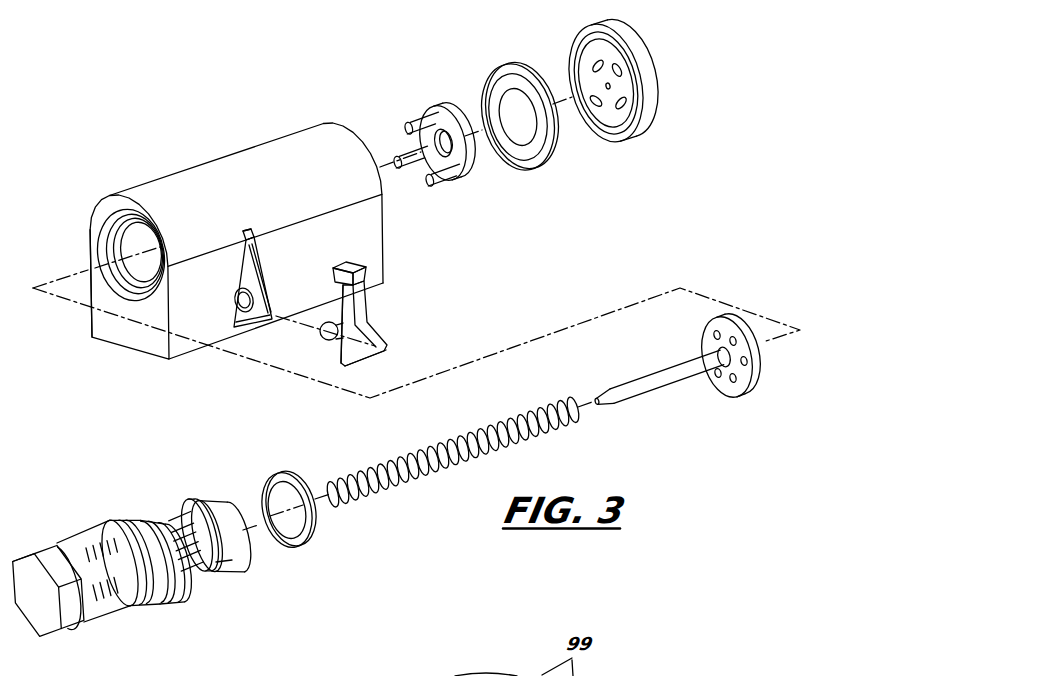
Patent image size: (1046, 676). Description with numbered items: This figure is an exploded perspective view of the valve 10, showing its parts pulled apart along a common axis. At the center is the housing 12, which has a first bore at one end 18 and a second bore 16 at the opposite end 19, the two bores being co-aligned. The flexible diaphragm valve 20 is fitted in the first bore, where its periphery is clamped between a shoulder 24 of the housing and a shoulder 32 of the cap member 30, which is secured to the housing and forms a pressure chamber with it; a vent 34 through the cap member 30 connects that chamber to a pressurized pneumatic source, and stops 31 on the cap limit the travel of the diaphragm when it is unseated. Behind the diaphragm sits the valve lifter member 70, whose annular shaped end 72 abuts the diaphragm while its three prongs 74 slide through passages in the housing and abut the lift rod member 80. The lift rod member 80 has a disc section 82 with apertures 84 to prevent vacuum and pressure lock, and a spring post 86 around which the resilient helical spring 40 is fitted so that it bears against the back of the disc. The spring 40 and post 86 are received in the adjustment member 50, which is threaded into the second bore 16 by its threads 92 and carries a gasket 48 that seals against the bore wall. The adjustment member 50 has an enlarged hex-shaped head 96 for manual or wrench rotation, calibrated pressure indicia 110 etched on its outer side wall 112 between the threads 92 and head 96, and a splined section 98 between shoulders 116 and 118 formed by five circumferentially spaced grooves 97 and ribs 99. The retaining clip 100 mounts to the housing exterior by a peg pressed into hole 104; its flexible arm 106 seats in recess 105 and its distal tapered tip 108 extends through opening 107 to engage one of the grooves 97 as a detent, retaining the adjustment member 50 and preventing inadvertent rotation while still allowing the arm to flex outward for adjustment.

The valve 10 is at (338, 85).
The housing 12 is at (261, 144).
The second bore 16 is at (130, 238).
The end of housing 18 is at (356, 142).
The end of housing 19 is at (90, 227).
The flexible diaphragm valve 20 is at (558, 140).
The shoulder of housing 24 is at (518, 67).
The cap member 30 is at (656, 127).
The stops 31 is at (618, 70).
The shoulder of cap member 32 is at (602, 37).
The vent 34 is at (604, 85).
The resilient helical spring 40 is at (412, 487).
The gasket 48 is at (293, 543).
The adjustment member 50 is at (105, 622).
The valve lifter member 70 is at (442, 100).
The annular shaped end 72 is at (453, 103).
The prongs 74 is at (410, 117).
The lift rod member 80 is at (627, 370).
The disc section 82 is at (753, 350).
The apertures 84 is at (735, 379).
The spring post 86 is at (642, 385).
The threads 92 is at (124, 521).
The enlarged head 96 is at (45, 558).
The grooves 97 is at (224, 564).
The splined section 98 is at (190, 573).
The ribs 99 is at (173, 550).
The retaining clip 100 is at (378, 344).
The hole 104 is at (248, 307).
The recess 105 is at (257, 282).
The flexible arm 106 is at (366, 305).
The opening 107 is at (249, 232).
The distal tapered tip 108 is at (337, 267).
The calibrated pressure indicia 110 is at (122, 587).
The outer side wall 112 is at (80, 558).
The shoulder 116 is at (148, 519).
The shoulder 118 is at (194, 500).